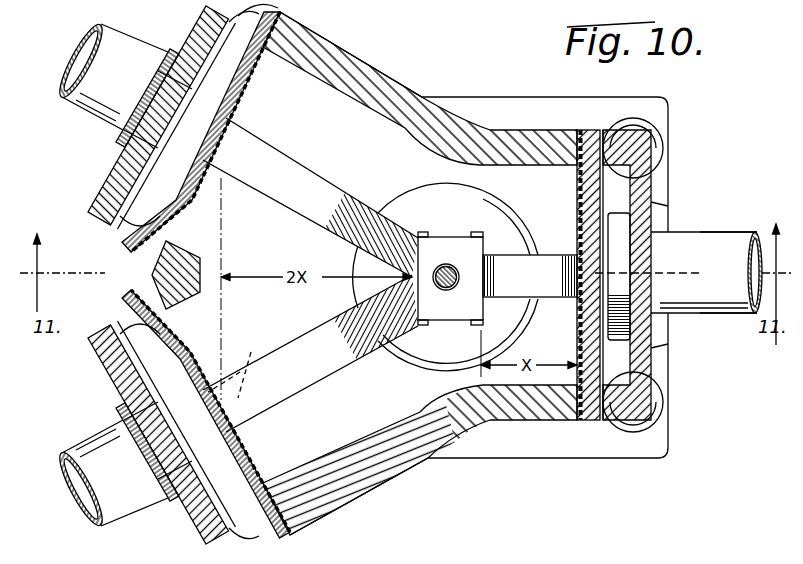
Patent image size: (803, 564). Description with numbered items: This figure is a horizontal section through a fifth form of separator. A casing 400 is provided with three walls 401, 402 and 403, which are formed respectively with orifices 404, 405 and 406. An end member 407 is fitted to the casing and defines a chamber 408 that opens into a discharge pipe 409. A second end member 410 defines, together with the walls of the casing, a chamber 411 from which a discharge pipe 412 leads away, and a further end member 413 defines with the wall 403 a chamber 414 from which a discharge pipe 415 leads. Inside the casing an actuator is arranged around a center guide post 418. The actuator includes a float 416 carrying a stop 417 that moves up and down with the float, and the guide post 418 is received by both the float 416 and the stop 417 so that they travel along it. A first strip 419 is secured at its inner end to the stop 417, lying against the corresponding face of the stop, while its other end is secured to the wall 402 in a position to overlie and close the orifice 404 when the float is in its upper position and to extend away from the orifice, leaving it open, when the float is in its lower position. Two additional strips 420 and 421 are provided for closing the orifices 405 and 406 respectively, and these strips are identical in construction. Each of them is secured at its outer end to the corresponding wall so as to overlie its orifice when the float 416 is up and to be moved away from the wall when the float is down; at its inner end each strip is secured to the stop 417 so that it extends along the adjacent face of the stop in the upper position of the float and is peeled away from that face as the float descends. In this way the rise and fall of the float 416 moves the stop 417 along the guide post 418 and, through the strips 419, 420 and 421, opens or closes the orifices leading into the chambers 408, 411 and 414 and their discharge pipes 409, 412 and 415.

The casing 400 is at (403, 86).
The wall 401 is at (578, 190).
The wall 402 is at (249, 89).
The wall 403 is at (252, 482).
The orifice 404 is at (598, 271).
The orifice 405 is at (237, 117).
The orifice 406 is at (250, 353).
The end member 407 is at (640, 365).
The chamber 408 is at (612, 382).
The discharge pipe 409 is at (733, 245).
The end member 410 is at (204, 30).
The chamber 411 is at (282, 10).
The discharge pipe 412 is at (90, 110).
The end member 413 is at (256, 549).
The chamber 414 is at (203, 527).
The discharge pipe 415 is at (98, 442).
The float 416 is at (413, 352).
The stop 417 is at (450, 250).
The center guide post 418 is at (429, 284).
The first strip 419 is at (545, 297).
The strip 420 is at (321, 370).
The strip 421 is at (318, 183).